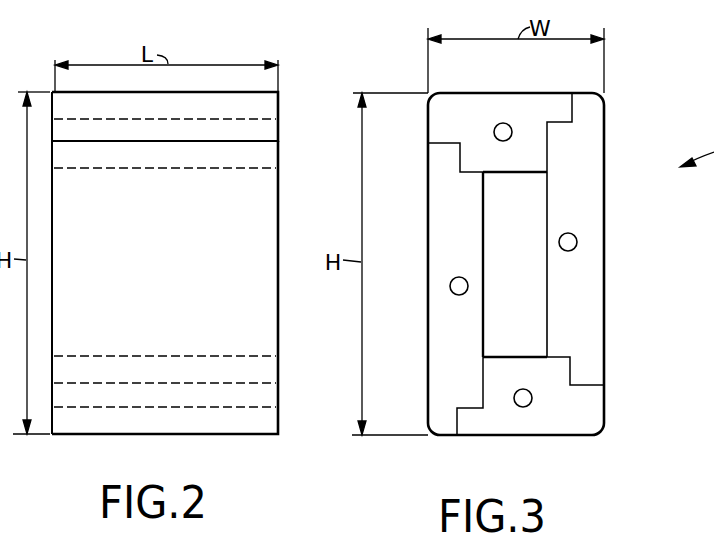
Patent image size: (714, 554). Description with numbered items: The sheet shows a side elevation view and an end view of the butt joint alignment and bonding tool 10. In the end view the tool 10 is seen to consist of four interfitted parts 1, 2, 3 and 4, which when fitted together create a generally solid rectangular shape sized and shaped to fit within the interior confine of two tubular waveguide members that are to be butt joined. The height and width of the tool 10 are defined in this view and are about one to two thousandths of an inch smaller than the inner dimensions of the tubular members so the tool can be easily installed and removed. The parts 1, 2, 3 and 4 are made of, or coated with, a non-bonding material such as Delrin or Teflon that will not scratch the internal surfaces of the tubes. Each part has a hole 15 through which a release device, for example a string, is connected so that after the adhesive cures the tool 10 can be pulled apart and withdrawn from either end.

In FIG. 2, the butt joint alignment and bonding tool 10 is at (194, 260).
In FIG. 2, the interfitted part 4 is at (243, 107).
In FIG. 3, the interfitted part 4 is at (463, 138).
In FIG. 2, the interfitted part 2 is at (240, 435).
In FIG. 3, the interfitted part 2 is at (546, 425).
In FIG. 3, the interfitted part 1 is at (565, 196).
In FIG. 3, the interfitted part 3 is at (453, 233).
In FIG. 3, the holes 15 is at (507, 123).